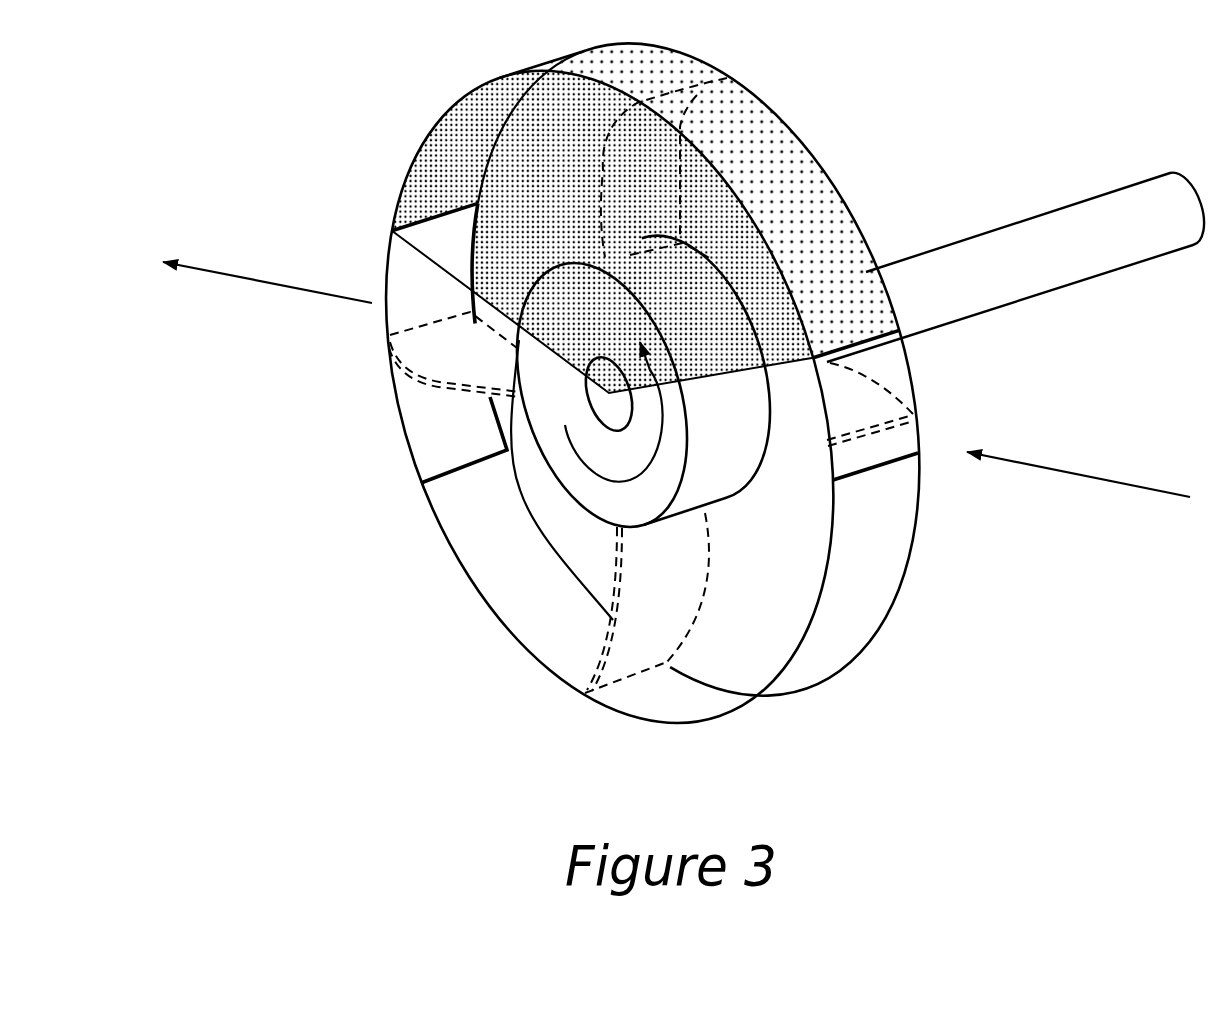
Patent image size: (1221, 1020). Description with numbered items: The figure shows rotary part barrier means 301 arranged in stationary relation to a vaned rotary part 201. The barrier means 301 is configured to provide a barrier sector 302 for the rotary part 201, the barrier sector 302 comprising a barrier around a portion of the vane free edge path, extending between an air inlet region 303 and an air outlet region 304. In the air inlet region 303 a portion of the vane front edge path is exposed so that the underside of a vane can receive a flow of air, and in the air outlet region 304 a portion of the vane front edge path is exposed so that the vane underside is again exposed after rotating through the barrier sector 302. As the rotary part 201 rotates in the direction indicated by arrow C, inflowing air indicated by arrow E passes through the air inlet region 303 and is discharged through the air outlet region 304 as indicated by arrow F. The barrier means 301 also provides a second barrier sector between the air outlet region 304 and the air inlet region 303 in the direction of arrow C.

The rotary part barrier means 301 is at (730, 120).
The barrier sector 302 is at (697, 240).
The air inlet region 303 is at (892, 440).
The air outlet region 304 is at (437, 413).
The rotary part 201 is at (592, 467).
The arrow indicating direction of rotation C is at (627, 460).
The arrow indicating inflowing air E is at (1088, 486).
The arrow indicating discharged air F is at (254, 276).